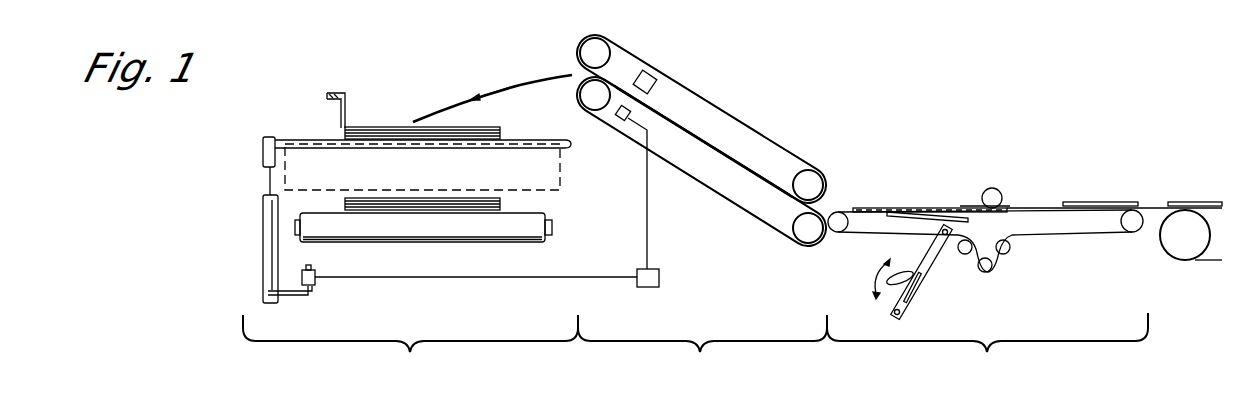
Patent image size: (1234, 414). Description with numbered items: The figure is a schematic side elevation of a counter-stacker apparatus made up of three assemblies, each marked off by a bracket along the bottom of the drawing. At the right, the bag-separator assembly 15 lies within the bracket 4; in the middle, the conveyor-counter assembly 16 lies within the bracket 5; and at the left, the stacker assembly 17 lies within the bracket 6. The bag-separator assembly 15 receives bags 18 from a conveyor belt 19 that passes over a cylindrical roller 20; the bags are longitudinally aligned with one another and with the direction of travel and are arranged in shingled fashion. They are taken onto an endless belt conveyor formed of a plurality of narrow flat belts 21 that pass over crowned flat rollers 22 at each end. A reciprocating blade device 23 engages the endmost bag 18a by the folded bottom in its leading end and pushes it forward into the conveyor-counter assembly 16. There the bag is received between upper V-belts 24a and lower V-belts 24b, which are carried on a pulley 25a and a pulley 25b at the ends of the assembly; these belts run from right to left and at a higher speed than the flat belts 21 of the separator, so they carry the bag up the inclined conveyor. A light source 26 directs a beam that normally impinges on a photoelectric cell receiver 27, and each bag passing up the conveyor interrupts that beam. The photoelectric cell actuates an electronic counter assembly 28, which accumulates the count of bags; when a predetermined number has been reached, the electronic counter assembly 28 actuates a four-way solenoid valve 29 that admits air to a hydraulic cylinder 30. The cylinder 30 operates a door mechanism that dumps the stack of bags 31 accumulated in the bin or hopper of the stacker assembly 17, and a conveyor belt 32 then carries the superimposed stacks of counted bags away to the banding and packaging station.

The bracket 4 is at (987, 347).
The bracket 5 is at (702, 348).
The bracket 6 is at (410, 348).
The bag-separator assembly 15 is at (1024, 206).
The conveyor-counter assembly 16 is at (727, 165).
The stacker assembly 17 is at (371, 119).
The bags 18 is at (1143, 203).
The endmost bag 18a is at (867, 207).
The conveyor belt 19 is at (1193, 262).
The cylindrical roller 20 is at (1173, 242).
The narrow flat belts 21 is at (1040, 238).
The crowned flat rollers 22 is at (840, 233).
The reciprocating blade device 23 is at (918, 294).
The upper V-belts 24a is at (750, 125).
The lower V-belts 24b is at (695, 181).
The pulley 25a is at (815, 175).
The pulley 25b is at (805, 241).
The light source 26 is at (648, 78).
The photoelectric cell receiver 27 is at (620, 122).
The electronic counter assembly 28 is at (659, 278).
The 4-way solenoid valve 29 is at (316, 276).
The hydraulic cylinder 30 is at (263, 226).
The stack of bags 31 is at (455, 205).
The conveyor belt 32 is at (417, 232).